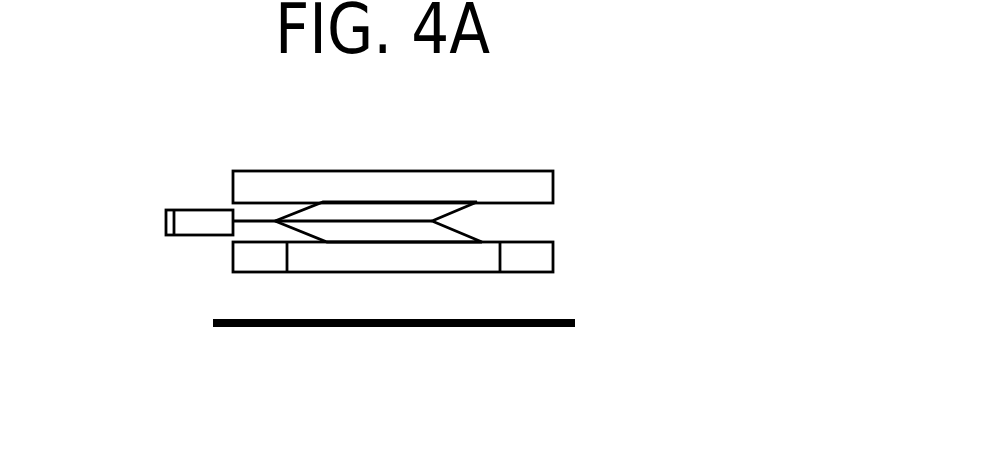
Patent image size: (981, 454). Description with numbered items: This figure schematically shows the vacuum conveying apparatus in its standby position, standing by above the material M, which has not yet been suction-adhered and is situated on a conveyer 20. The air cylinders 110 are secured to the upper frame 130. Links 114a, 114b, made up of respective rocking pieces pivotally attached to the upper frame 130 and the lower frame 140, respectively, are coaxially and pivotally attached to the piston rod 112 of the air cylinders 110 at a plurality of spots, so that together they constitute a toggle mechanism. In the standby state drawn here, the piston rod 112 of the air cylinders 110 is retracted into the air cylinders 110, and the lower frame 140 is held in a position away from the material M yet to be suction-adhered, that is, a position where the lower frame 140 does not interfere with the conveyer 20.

The air cylinder 110 is at (165, 221).
The piston rod 112 is at (368, 222).
The link 114a is at (287, 213).
The link 114b is at (460, 233).
The upper frame 130 is at (553, 186).
The lower frame 140 is at (553, 258).
The material M is at (230, 320).
The conveyer 20 is at (528, 345).